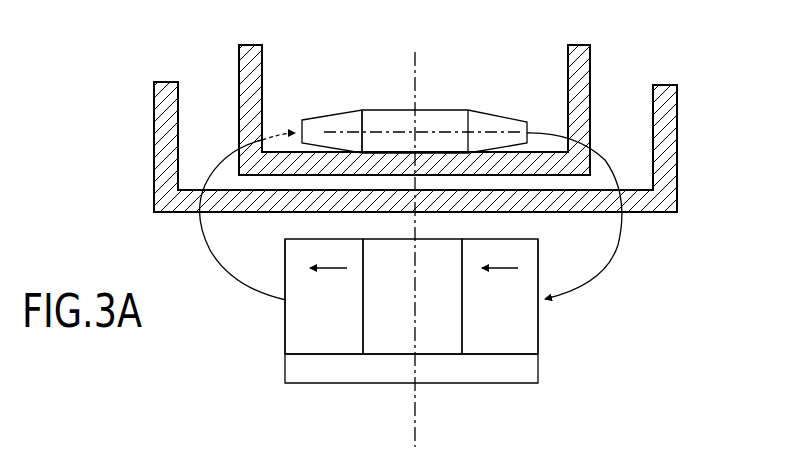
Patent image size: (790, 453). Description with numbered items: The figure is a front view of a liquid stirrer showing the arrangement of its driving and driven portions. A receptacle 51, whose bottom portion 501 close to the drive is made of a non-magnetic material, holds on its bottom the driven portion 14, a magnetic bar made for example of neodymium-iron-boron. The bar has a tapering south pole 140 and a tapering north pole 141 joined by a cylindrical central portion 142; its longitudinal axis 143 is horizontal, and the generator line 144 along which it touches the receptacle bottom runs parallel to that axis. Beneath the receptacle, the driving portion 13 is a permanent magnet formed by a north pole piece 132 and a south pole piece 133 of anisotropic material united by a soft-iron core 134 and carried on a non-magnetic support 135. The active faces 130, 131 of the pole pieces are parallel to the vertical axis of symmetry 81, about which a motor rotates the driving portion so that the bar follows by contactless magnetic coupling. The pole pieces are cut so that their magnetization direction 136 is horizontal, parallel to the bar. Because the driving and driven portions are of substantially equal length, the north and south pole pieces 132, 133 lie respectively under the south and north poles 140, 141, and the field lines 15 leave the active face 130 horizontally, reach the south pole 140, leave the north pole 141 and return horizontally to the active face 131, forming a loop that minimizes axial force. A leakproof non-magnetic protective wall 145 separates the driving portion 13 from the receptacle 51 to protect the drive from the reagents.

The driving portion 13 is at (424, 320).
The active face 130 is at (284, 325).
The active face 131 is at (541, 280).
The north pole piece 132 is at (285, 275).
The south pole piece 133 is at (530, 257).
The core 134 is at (390, 345).
The non-magnetic support 135 is at (519, 372).
The magnetization direction 136 is at (347, 266).
The driven portion 14 is at (428, 85).
The south pole 140 is at (301, 118).
The north pole 141 is at (478, 118).
The cylindrical central portion 142 is at (405, 118).
The longitudinal axis 143 is at (495, 130).
The generator line 144 is at (391, 118).
The protective wall 145 is at (674, 91).
The field lines 15 is at (236, 285).
The receptacle 51 is at (592, 60).
The bottom portion 501 is at (593, 120).
The vertical axis of symmetry 81 is at (410, 70).